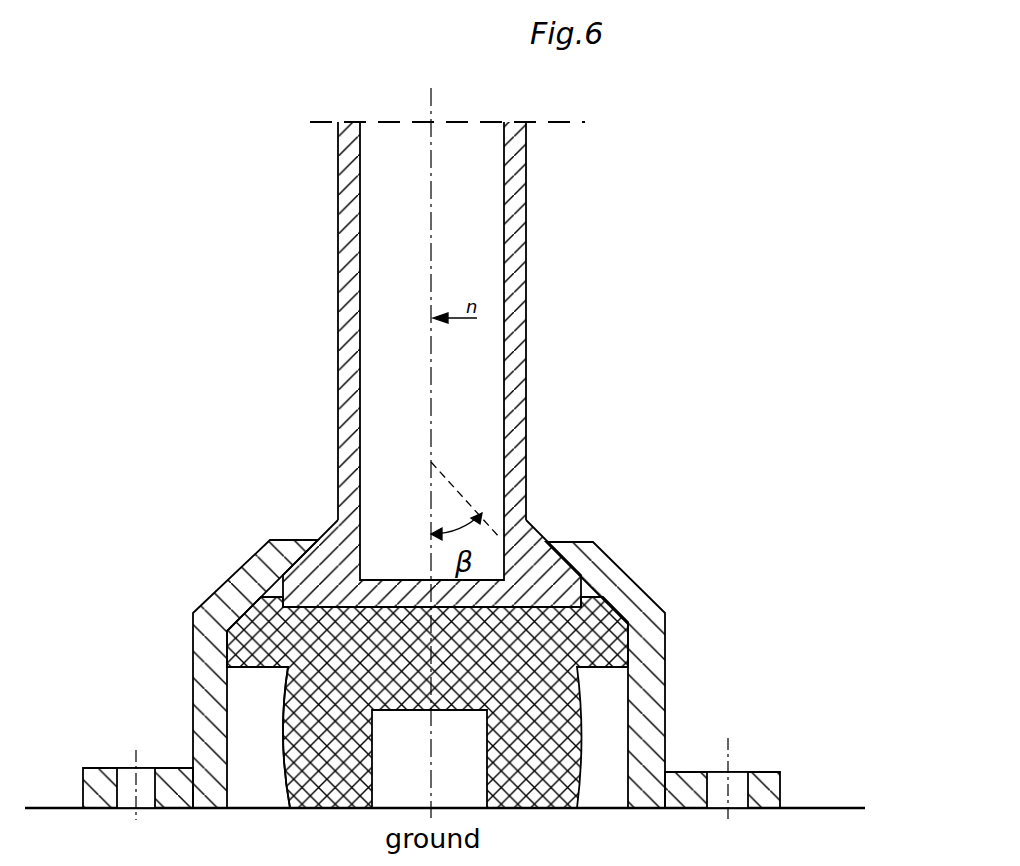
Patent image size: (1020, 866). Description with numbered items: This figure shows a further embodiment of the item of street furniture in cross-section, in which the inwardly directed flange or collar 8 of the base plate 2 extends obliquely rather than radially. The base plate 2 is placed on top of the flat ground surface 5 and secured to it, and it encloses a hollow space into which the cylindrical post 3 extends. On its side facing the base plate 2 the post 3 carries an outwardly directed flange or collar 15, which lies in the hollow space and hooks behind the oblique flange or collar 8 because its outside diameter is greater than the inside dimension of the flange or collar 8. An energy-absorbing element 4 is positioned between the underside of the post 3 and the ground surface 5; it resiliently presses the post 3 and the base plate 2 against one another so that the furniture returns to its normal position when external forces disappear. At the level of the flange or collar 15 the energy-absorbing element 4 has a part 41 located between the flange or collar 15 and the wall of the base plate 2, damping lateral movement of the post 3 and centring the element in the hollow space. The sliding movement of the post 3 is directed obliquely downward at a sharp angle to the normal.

The base plate 2 is at (683, 697).
The post 3 is at (520, 263).
The energy-absorbing element 4 is at (531, 793).
The ground surface 5 is at (304, 759).
The inwardly directed flange or collar 8 is at (265, 572).
The outwardly directed flange or collar 15 is at (552, 602).
The part of the energy-absorbing element 41 is at (581, 605).